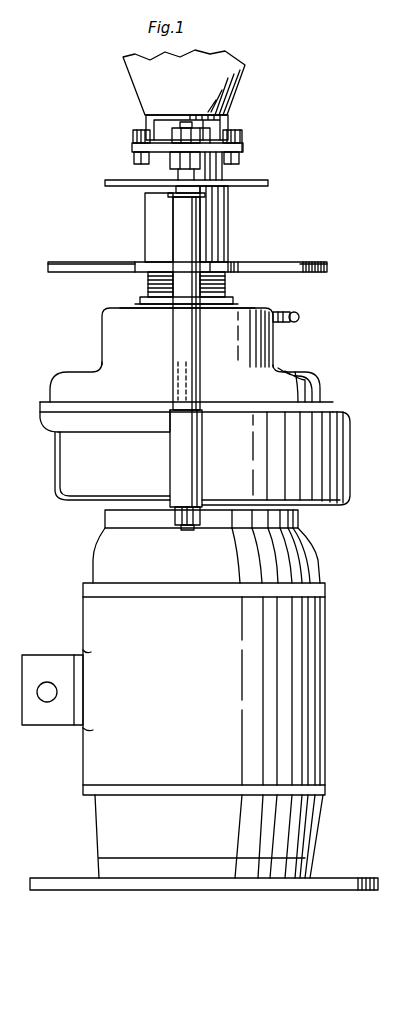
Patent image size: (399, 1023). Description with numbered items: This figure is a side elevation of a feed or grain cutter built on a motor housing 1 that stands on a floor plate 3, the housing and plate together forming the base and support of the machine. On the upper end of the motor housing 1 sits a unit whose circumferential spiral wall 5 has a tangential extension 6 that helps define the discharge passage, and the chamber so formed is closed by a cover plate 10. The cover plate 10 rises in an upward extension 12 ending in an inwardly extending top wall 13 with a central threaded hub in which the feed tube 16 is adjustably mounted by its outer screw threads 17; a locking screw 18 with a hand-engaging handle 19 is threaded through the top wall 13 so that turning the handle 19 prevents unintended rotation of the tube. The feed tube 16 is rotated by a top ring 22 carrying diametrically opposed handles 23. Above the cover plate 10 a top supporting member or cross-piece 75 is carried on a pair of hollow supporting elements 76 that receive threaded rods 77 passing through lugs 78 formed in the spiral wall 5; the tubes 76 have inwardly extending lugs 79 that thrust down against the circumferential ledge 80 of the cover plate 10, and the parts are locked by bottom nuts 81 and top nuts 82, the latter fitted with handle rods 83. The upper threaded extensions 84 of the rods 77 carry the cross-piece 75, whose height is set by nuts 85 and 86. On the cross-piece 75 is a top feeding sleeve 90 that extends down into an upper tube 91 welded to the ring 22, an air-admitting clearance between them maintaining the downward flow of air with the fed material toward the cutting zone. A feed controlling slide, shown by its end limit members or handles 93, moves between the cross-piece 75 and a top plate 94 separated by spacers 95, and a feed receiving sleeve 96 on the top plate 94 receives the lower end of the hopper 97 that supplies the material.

The motor housing 1 is at (312, 660).
The floor plate 3 is at (350, 877).
The circumferential spiral wall 5 is at (55, 467).
The tangential extension 6 is at (348, 408).
The cover plate 10 is at (66, 364).
The upward extension 12 is at (101, 327).
The top wall 13 is at (112, 306).
The feed tube 16 is at (148, 285).
The screw threads 17 is at (226, 285).
The locking screw 18 is at (282, 314).
The handle 19 is at (300, 317).
The top ring 22 is at (234, 262).
The handles 23 is at (62, 262).
The top supporting member 75 is at (133, 150).
The supporting elements 76 is at (173, 227).
The threaded rods 77 is at (185, 530).
The lugs 78 is at (202, 441).
The inwardly extending lugs 79 is at (178, 368).
The circumferential ledge 80 is at (46, 400).
The bottom nuts 81 is at (175, 517).
The top nuts 82 is at (176, 195).
The handle rods 83 is at (268, 183).
The upper extensions 84 is at (186, 122).
The nut 85 is at (170, 165).
The nut 86 is at (200, 136).
The top feeding sleeve 90 is at (222, 172).
The upper tube 91 is at (228, 213).
The end limit members 93 is at (160, 124).
The top plate 94 is at (243, 145).
The spacers 95 is at (133, 143).
The feed receiving sleeve 96 is at (212, 130).
The hopper 97 is at (242, 69).